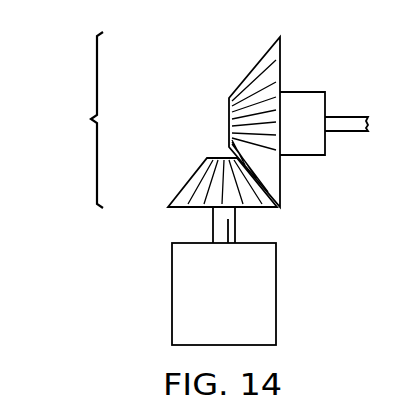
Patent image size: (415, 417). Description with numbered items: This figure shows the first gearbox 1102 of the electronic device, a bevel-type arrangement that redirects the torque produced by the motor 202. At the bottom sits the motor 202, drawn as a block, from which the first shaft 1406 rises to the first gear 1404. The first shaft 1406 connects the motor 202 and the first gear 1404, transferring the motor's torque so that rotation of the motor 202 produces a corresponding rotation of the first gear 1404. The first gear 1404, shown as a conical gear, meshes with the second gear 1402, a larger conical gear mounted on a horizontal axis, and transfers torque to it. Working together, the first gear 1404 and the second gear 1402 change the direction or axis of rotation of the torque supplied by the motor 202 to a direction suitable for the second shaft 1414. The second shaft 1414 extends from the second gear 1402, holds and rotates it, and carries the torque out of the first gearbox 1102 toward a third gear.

The first gearbox 1102 is at (70, 120).
The second gear 1402 is at (229, 120).
The first gear 1404 is at (189, 183).
The first shaft 1406 is at (213, 218).
The motor 202 is at (242, 306).
The second shaft 1414 is at (345, 116).